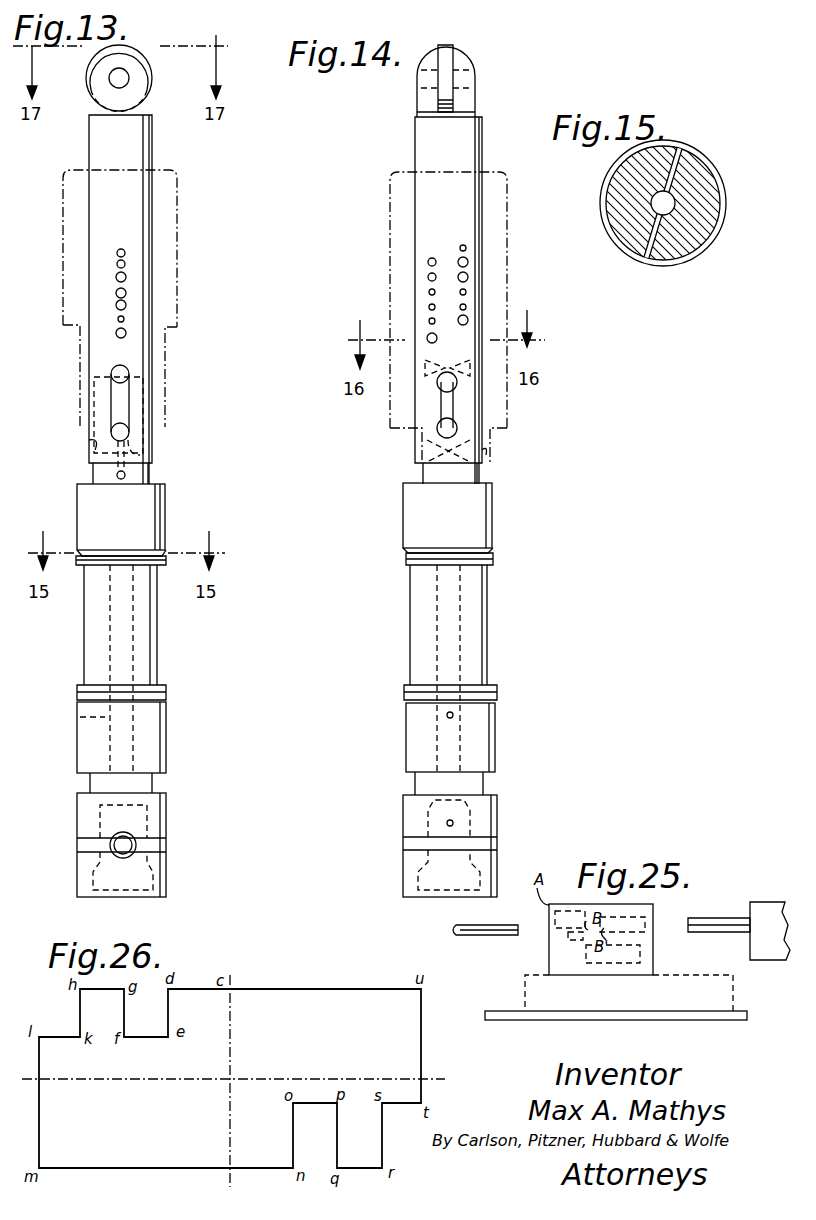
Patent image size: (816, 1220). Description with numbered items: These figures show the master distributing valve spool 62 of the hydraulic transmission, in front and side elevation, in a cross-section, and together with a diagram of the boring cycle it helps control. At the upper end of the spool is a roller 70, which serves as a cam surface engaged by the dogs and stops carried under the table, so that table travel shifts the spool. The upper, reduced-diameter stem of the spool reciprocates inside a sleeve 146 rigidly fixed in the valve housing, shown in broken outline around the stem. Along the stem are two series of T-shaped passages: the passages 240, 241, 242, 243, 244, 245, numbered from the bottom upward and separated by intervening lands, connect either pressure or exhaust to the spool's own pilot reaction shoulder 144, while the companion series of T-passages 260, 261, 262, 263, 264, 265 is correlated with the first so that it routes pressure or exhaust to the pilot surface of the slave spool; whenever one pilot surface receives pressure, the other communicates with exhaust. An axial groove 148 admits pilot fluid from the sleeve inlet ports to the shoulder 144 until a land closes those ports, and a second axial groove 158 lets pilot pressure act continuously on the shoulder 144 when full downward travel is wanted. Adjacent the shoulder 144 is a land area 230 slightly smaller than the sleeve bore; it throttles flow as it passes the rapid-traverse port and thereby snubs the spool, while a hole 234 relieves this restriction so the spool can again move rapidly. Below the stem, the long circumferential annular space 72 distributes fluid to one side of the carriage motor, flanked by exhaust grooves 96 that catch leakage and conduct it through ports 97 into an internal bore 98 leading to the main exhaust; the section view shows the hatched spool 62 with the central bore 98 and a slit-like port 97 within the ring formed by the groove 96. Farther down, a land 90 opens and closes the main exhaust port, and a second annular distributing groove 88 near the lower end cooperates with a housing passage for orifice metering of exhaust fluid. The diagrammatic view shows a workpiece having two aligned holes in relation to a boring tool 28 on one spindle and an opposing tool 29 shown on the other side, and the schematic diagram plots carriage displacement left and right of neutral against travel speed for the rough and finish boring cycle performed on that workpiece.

In FIG. 13, the rollers 70 is at (152, 78).
In FIG. 14, the rollers 70 is at (453, 63).
In FIG. 13, the sleeve 146 is at (177, 205).
In FIG. 14, the sleeve 146 is at (448, 317).
In FIG. 13, the T-shaped passage 245 is at (126, 263).
In FIG. 14, the T-shaped passage 245 is at (432, 258).
In FIG. 13, the T-shaped passage 244 is at (127, 277).
In FIG. 14, the T-shaped passage 244 is at (428, 276).
In FIG. 13, the T-shaped passage 243 is at (127, 293).
In FIG. 14, the T-shaped passage 243 is at (429, 291).
In FIG. 13, the T-shaped passage 242 is at (127, 305).
In FIG. 14, the T-shaped passage 242 is at (429, 306).
In FIG. 13, the T-shaped passage 241 is at (125, 319).
In FIG. 14, the T-shaped passage 241 is at (429, 320).
In FIG. 13, the T-shaped passage 240 is at (127, 333).
In FIG. 14, the T-shaped passage 240 is at (427, 338).
In FIG. 14, the T-passage 265 is at (466, 247).
In FIG. 14, the T-passage 264 is at (468, 261).
In FIG. 14, the T-passage 263 is at (468, 276).
In FIG. 14, the T-passage 262 is at (466, 291).
In FIG. 14, the T-passage 261 is at (466, 306).
In FIG. 14, the T-passage 260 is at (463, 325).
In FIG. 13, the axial groove 158 is at (112, 400).
In FIG. 14, the axial groove 158 is at (455, 405).
In FIG. 13, the axial groove 148 is at (152, 410).
In FIG. 14, the axial groove 148 is at (453, 400).
In FIG. 13, the land area 230 is at (90, 445).
In FIG. 14, the land area 230 is at (484, 455).
In FIG. 13, the hole 234 is at (135, 453).
In FIG. 14, the hole 234 is at (418, 452).
In FIG. 13, the reaction shoulder 144 is at (160, 492).
In FIG. 14, the reaction shoulder 144 is at (492, 490).
In FIG. 13, the through ports 97 is at (104, 553).
In FIG. 15, the through ports 97 is at (644, 248).
In FIG. 13, the exhaust grooves 96 is at (166, 556).
In FIG. 14, the exhaust grooves 96 is at (405, 556).
In FIG. 15, the exhaust grooves 96 is at (700, 250).
In FIG. 13, the annular space 72 is at (157, 665).
In FIG. 14, the annular space 72 is at (410, 642).
In FIG. 13, the internal bore 98 is at (133, 650).
In FIG. 14, the internal bore 98 is at (462, 628).
In FIG. 15, the internal bore 98 is at (675, 205).
In FIG. 13, the land 90 is at (166, 740).
In FIG. 14, the land 90 is at (406, 750).
In FIG. 13, the second annular distributing groove 88 is at (152, 783).
In FIG. 14, the second annular distributing groove 88 is at (410, 782).
In FIG. 15, the master distributing valve spool 62 is at (700, 170).
In FIG. 25, the cutting tool 28 is at (475, 935).
In FIG. 25, the rod 29 is at (716, 918).